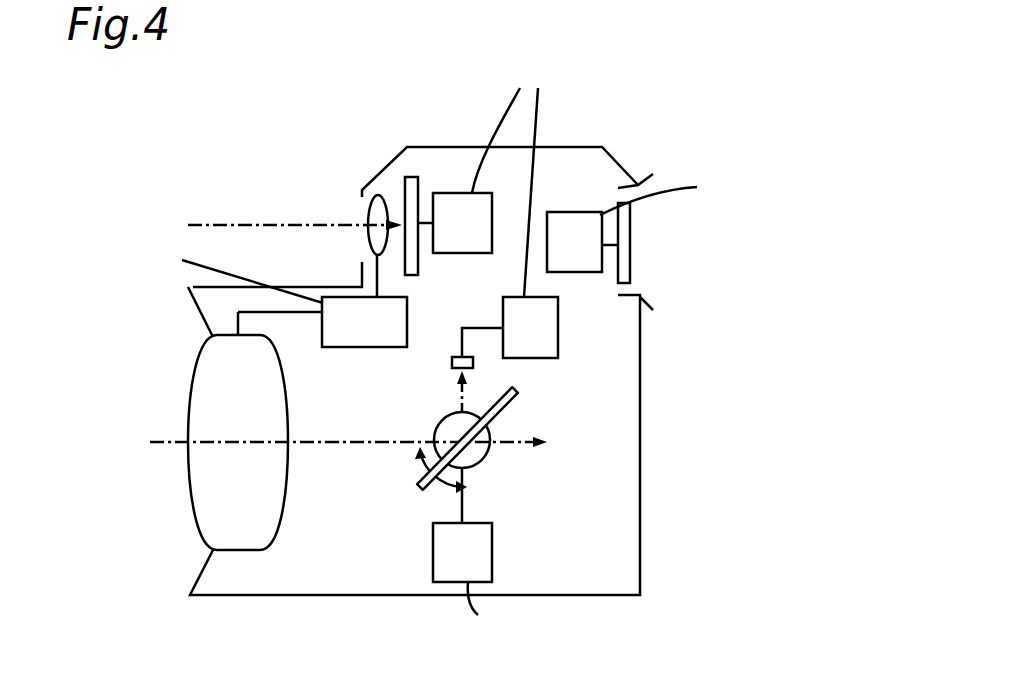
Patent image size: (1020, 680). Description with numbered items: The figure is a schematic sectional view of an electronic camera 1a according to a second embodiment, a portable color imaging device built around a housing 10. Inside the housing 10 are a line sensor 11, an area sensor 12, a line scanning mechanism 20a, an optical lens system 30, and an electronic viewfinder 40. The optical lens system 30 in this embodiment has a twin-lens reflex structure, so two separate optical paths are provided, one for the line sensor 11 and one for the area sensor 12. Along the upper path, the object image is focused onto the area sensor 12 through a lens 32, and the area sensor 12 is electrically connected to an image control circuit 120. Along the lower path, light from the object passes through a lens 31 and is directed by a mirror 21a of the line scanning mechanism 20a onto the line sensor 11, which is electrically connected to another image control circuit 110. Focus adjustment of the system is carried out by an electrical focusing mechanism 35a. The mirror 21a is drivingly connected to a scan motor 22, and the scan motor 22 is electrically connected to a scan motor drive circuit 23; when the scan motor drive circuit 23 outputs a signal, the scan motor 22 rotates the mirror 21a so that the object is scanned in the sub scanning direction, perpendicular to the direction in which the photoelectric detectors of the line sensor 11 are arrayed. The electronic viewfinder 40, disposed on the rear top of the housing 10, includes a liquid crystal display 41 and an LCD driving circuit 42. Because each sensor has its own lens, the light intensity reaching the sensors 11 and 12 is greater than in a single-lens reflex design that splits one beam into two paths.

The electronic camera 1a is at (281, 194).
The housing 10 is at (642, 423).
The line sensor 11 is at (453, 357).
The area sensor 12 is at (405, 177).
The image control circuit 120 is at (465, 193).
The electronic viewfinder 40 is at (620, 167).
The LCD driving circuit 42 is at (570, 212).
The LCD panel 41 is at (630, 228).
The lens 32 is at (367, 233).
The image control circuit 110 is at (560, 330).
The optical lens system 30 is at (291, 376).
The electrical focusing mechanism 35a is at (397, 347).
The lens 31 is at (290, 467).
The mirror 21a is at (503, 412).
The scan motor 22 is at (488, 460).
The line scanning mechanism 20a is at (412, 502).
The scan motor drive circuit 23 is at (493, 550).